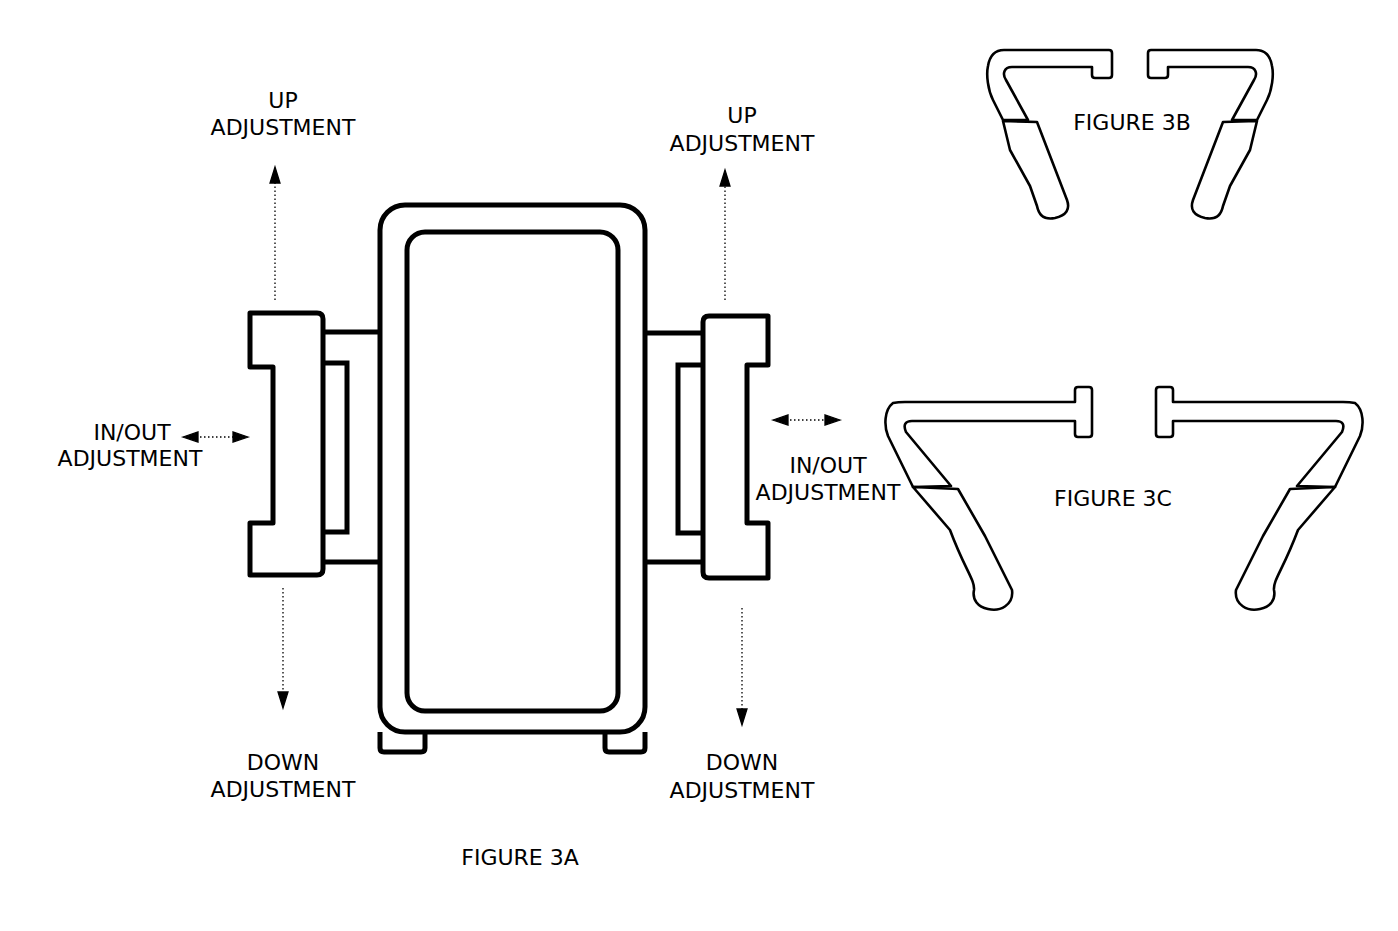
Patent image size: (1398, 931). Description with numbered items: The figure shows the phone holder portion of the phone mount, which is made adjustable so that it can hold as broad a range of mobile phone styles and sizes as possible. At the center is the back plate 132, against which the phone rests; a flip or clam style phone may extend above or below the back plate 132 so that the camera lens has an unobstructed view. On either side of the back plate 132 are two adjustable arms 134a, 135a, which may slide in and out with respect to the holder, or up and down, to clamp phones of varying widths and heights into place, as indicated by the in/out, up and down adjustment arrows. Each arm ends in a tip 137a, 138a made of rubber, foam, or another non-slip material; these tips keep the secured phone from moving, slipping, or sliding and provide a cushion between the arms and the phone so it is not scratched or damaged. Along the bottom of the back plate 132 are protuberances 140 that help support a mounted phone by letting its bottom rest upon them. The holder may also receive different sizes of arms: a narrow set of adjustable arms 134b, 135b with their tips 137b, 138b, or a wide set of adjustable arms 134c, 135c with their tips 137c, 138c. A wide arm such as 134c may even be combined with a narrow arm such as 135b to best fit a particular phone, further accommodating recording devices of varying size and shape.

In FIG. 3A, the back plate 132 is at (503, 300).
In FIG. 3A, the adjustable arm 134a is at (351, 350).
In FIG. 3A, the adjustable arm 135a is at (655, 368).
In FIG. 3A, the tip 137a is at (283, 343).
In FIG. 3A, the tip 138a is at (740, 353).
In FIG. 3A, the protuberances 140 is at (423, 753).
In FIG. 3B, the narrow adjustable arm 134b is at (986, 63).
In FIG. 3B, the narrow adjustable arm 135b is at (1275, 63).
In FIG. 3B, the tip 137b is at (1047, 198).
In FIG. 3B, the tip 138b is at (1216, 207).
In FIG. 3C, the wide adjustable arm 134c is at (898, 408).
In FIG. 3C, the wide adjustable arm 135c is at (1340, 418).
In FIG. 3C, the tip 137c is at (981, 559).
In FIG. 3C, the tip 138c is at (1271, 557).